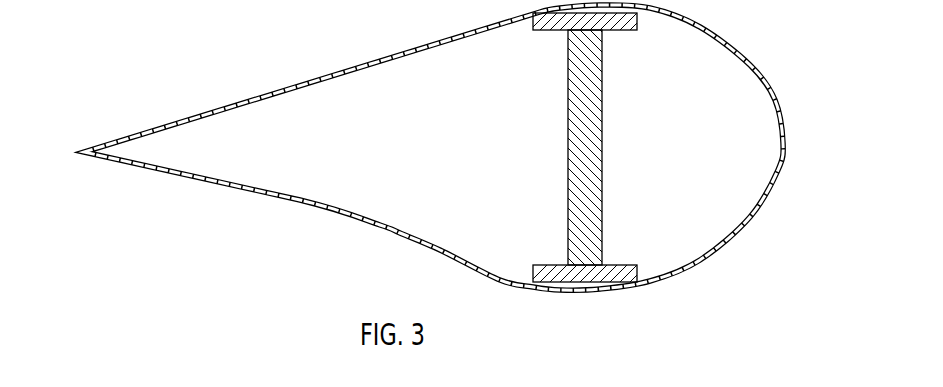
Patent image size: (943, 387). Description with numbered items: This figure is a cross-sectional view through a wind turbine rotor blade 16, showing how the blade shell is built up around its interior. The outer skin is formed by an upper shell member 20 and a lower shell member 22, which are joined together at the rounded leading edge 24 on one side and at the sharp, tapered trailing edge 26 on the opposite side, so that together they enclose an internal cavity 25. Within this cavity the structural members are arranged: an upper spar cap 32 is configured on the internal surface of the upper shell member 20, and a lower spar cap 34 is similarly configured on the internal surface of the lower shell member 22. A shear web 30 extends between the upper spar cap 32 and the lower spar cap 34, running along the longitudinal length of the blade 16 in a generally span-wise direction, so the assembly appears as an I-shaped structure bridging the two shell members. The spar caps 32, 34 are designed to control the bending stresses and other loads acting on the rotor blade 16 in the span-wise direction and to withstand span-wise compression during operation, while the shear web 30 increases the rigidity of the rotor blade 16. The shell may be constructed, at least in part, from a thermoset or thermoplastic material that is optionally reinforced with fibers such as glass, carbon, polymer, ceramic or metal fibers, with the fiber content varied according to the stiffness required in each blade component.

The rotor blade 16 is at (206, 44).
The upper shell member 20 is at (438, 151).
The lower shell member 22 is at (438, 151).
The leading edge 24 is at (438, 147).
The internal cavity 25 is at (382, 183).
The trailing edge 26 is at (83, 152).
The shear web 30 is at (602, 93).
The upper spar cap 32 is at (547, 31).
The lower spar cap 34 is at (553, 265).